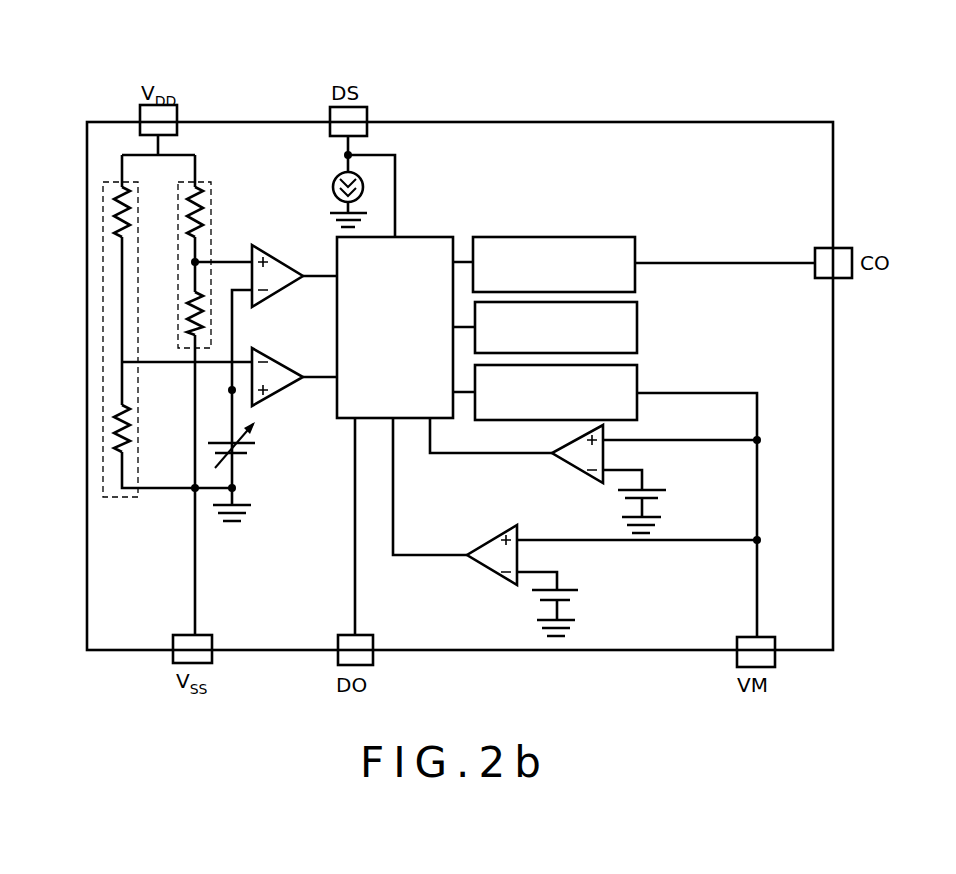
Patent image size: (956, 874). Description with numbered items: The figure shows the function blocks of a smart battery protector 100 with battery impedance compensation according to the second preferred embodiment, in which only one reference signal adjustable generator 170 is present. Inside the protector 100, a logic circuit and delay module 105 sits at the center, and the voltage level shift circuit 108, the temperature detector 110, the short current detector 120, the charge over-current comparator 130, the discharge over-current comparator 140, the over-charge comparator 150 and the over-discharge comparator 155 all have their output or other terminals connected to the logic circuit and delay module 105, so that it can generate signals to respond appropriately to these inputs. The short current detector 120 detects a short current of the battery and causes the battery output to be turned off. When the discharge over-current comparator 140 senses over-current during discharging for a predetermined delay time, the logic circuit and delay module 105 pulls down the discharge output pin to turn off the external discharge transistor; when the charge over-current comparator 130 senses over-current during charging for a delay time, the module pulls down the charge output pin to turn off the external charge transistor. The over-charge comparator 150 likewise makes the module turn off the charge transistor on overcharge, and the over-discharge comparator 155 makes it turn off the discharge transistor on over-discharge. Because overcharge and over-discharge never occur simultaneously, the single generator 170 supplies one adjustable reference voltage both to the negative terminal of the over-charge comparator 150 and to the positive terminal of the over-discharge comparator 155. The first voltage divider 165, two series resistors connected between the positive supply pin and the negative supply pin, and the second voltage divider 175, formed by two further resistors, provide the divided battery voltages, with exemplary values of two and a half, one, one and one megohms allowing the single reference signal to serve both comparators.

The smart battery protector 100 is at (744, 55).
The logic circuit and delay module 105 is at (422, 237).
The voltage level shift circuit 108 is at (639, 246).
The temperature detector 110 is at (639, 318).
The short current detector 120 is at (639, 381).
The charge over-current comparator 130 is at (572, 440).
The discharge over-current comparator 140 is at (498, 535).
The over-charge comparator 150 is at (258, 255).
The over-discharge comparator 155 is at (258, 352).
The first voltage divider 165 is at (205, 182).
The reference signal adjustable generator 170 is at (242, 462).
The second voltage divider 175 is at (110, 182).